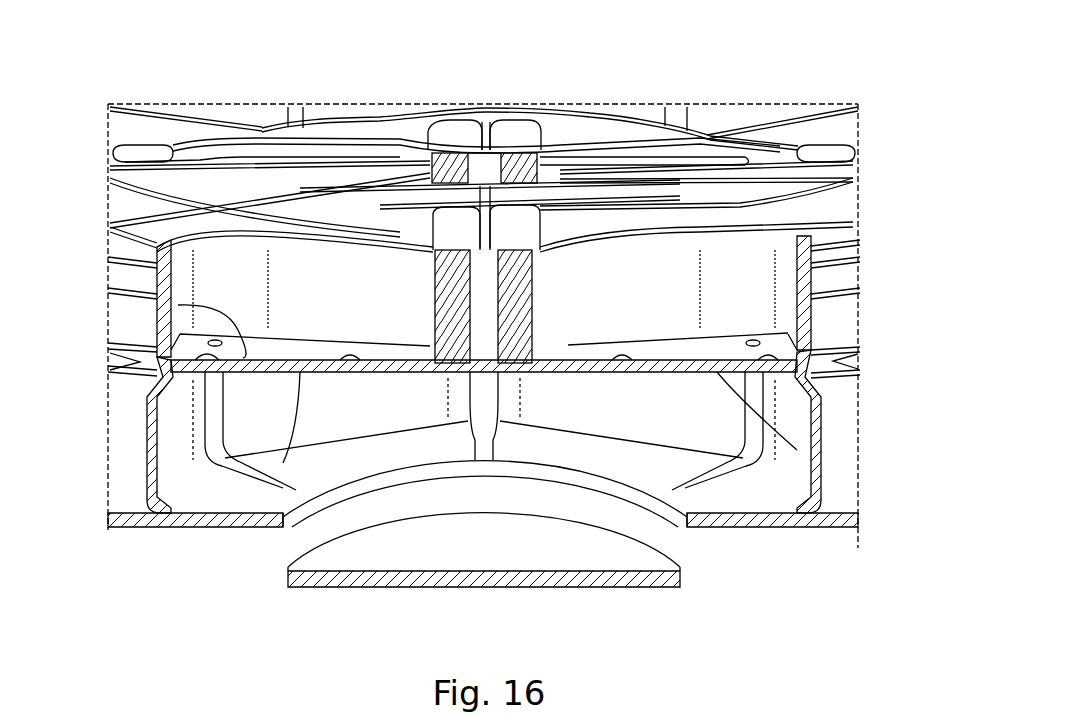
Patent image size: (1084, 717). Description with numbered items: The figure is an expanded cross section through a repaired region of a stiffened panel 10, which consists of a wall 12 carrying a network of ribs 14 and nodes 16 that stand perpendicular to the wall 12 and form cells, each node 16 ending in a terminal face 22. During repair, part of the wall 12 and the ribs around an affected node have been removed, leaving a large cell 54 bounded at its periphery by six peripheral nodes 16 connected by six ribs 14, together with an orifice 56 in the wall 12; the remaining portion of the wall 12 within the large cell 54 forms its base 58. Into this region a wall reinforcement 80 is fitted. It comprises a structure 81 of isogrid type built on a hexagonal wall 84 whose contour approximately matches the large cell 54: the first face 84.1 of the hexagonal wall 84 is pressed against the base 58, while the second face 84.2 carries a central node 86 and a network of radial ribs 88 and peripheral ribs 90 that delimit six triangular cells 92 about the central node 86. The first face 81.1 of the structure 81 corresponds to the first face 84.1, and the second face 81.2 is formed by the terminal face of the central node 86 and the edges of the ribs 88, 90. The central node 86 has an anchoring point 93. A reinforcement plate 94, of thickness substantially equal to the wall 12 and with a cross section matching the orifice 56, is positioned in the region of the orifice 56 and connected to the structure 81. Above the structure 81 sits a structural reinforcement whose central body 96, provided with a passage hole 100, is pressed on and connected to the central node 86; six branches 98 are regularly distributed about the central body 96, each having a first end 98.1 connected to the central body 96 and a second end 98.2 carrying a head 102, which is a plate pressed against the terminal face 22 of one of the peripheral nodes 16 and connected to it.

The stiffened panel 10 is at (850, 92).
The wall 12 is at (870, 516).
The ribs 14 is at (137, 463).
The nodes 16 is at (133, 383).
The terminal faces of the nodes 22 is at (150, 355).
The large cell 54 is at (772, 525).
The orifice 56 is at (738, 446).
The base 58 is at (785, 490).
The wall reinforcement 80 is at (835, 248).
The structure of isogrid type 81 is at (556, 137).
The first face of the structure 81.1 is at (795, 382).
The second face of the structure 81.2 is at (800, 240).
The hexagonal wall 84 is at (200, 468).
The first face of the hexagonal wall 84.1 is at (258, 384).
The second face of the hexagonal wall 84.2 is at (158, 307).
The central node 86 is at (430, 135).
The radial ribs 88 is at (357, 212).
The peripheral ribs 90 is at (152, 253).
The triangular cells 92 is at (247, 260).
The anchoring point 93 is at (430, 240).
The reinforcement plate 94 is at (475, 594).
The central body 96 is at (447, 142).
The branches 98 is at (243, 127).
The first end of the branch 98.1 is at (400, 210).
The second end of the branch 98.2 is at (178, 150).
The passage hole 100 is at (495, 148).
The head 102 is at (128, 150).